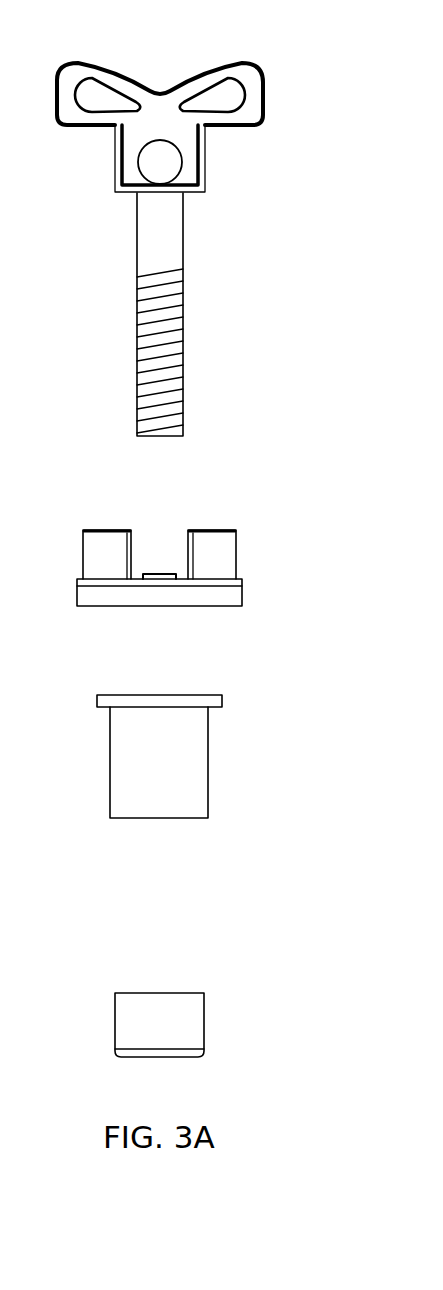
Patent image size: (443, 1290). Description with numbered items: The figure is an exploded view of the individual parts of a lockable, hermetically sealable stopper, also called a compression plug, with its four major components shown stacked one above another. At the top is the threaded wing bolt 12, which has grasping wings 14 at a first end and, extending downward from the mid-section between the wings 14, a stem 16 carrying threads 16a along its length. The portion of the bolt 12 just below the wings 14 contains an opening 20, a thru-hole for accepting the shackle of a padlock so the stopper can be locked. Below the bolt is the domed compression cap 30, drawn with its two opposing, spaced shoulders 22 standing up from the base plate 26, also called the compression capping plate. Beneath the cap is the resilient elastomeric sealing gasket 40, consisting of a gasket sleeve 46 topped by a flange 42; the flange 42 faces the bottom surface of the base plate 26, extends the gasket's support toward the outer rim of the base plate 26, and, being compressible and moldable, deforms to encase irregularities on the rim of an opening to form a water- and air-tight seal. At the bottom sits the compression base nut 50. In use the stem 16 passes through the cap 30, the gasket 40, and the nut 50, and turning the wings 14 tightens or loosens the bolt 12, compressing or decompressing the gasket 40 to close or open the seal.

The threaded wing bolt 12 is at (197, 229).
The wings 14 is at (258, 78).
The stem section 16 is at (213, 314).
The threads 16a is at (178, 323).
The opening 20 is at (165, 172).
The shoulder 22 is at (233, 532).
The base plate 26 is at (82, 598).
The domed compression cap 30 is at (185, 565).
The sealing gasket 40 is at (186, 763).
The flange 42 is at (222, 700).
The sleeve 46 is at (110, 772).
The compression base nut 50 is at (225, 1005).